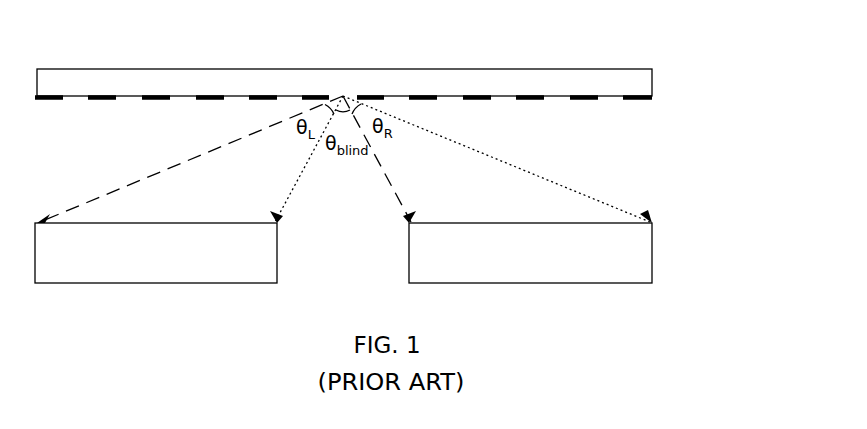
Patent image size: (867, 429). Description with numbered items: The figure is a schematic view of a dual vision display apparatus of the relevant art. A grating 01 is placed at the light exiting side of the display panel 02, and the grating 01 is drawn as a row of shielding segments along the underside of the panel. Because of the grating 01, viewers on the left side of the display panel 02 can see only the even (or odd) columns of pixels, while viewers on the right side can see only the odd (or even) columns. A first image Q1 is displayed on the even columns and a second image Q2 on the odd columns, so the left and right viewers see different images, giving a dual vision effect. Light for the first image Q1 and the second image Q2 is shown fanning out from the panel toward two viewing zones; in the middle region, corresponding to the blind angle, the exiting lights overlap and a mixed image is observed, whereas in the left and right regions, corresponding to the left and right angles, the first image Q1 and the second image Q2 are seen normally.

The grating 01 is at (653, 97).
The display panel 02 is at (341, 73).
The first image Q1 is at (156, 253).
The second image Q2 is at (530, 253).